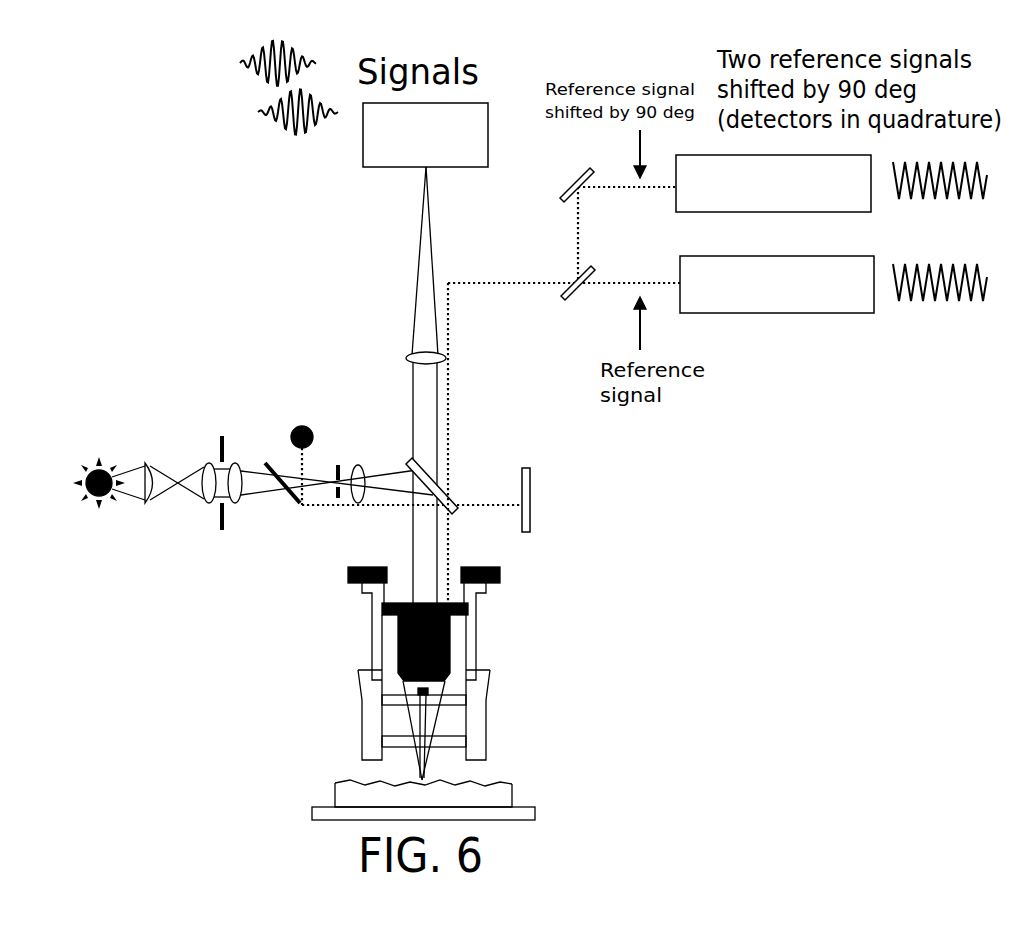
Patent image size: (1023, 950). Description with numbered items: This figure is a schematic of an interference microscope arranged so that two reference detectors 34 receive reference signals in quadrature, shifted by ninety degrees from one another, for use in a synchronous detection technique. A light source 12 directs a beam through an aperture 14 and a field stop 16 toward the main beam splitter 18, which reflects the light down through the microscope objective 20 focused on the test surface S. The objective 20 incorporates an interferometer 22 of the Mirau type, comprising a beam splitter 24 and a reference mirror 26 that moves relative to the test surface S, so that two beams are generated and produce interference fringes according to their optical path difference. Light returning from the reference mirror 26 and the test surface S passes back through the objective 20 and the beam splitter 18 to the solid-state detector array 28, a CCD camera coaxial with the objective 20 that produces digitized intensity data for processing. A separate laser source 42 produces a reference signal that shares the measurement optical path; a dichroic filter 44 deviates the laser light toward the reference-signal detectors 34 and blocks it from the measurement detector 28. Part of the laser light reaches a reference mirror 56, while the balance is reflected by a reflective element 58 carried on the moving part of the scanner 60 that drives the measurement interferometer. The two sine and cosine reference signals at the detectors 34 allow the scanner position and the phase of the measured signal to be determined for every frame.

The light source 12 is at (88, 470).
The aperture 14 is at (222, 437).
The field stop 16 is at (342, 463).
The beam splitter 18 is at (452, 497).
The microscope objective 20 is at (450, 645).
The interferometer 22 is at (490, 682).
The beam splitter 24 is at (452, 738).
The reference mirror 26 is at (397, 705).
The solid-state detector array 28 is at (490, 136).
The reference-signal detector 34 is at (871, 205).
The laser source 42 is at (302, 425).
The dichroic filter 44 is at (444, 287).
The reference mirror 56 is at (530, 505).
The reflective element 58 is at (449, 600).
The scanner 60 is at (490, 590).
The test surface S is at (493, 785).